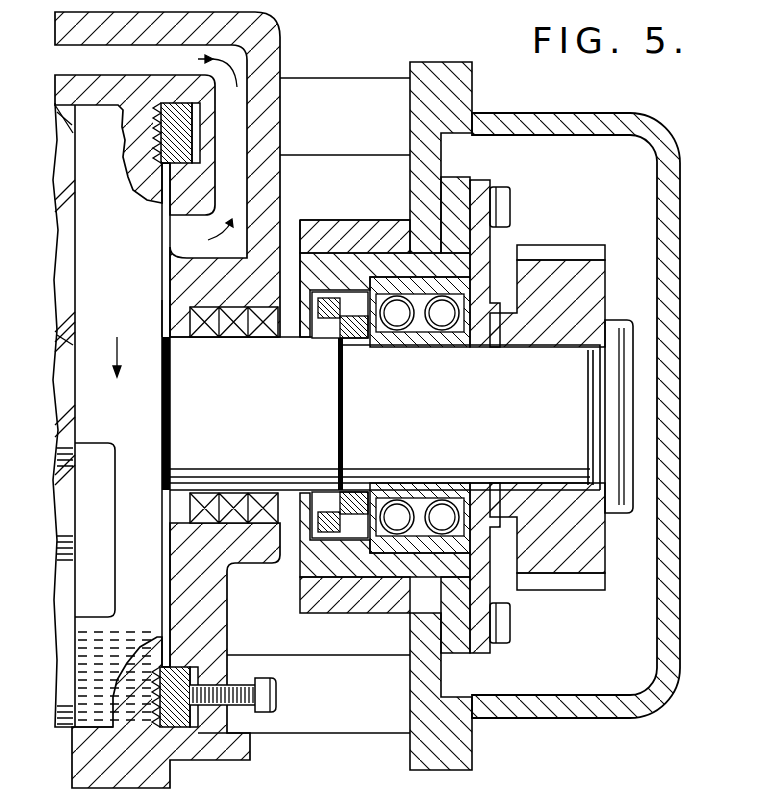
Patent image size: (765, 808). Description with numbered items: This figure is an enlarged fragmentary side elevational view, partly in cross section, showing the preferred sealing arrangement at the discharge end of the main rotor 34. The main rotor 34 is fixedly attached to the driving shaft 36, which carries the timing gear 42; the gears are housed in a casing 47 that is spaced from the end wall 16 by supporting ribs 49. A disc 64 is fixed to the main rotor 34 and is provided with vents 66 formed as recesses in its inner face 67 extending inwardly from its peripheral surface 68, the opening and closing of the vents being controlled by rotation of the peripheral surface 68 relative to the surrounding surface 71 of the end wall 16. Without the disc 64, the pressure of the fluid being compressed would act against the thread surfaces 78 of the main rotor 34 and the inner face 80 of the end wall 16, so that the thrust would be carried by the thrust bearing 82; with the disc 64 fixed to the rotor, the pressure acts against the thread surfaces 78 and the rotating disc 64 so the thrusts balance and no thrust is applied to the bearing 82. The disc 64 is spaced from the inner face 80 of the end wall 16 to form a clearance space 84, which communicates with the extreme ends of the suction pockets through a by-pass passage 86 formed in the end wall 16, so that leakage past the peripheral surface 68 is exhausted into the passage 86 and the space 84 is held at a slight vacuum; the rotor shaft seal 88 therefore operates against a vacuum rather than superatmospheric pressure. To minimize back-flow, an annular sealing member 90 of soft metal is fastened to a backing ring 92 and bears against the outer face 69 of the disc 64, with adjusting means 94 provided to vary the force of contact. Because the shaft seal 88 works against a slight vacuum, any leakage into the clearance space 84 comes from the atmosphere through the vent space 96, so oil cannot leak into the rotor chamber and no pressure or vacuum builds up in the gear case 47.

The end wall 16 is at (282, 37).
The main rotor 34 is at (58, 272).
The driving shaft 36 is at (472, 410).
The timing gear 42 is at (600, 558).
The casing 47 is at (678, 283).
The supporting ribs 49 is at (350, 94).
The disc 64 is at (97, 285).
The vents 66 is at (88, 572).
The inner face 67 is at (72, 332).
The peripheral surface 68 is at (90, 730).
The outer face 69 is at (165, 322).
The surrounding surface 71 is at (70, 108).
The thread surfaces 78 is at (60, 195).
The inner face 80 is at (172, 610).
The thrust bearing 82 is at (424, 346).
The clearance space 84 is at (167, 505).
The by-pass passage 86 is at (168, 60).
The rotor shaft seal 88 is at (232, 335).
The annular sealing member 90 is at (172, 102).
The backing ring 92 is at (192, 137).
The adjusting means 94 is at (262, 692).
The vent space 96 is at (288, 240).